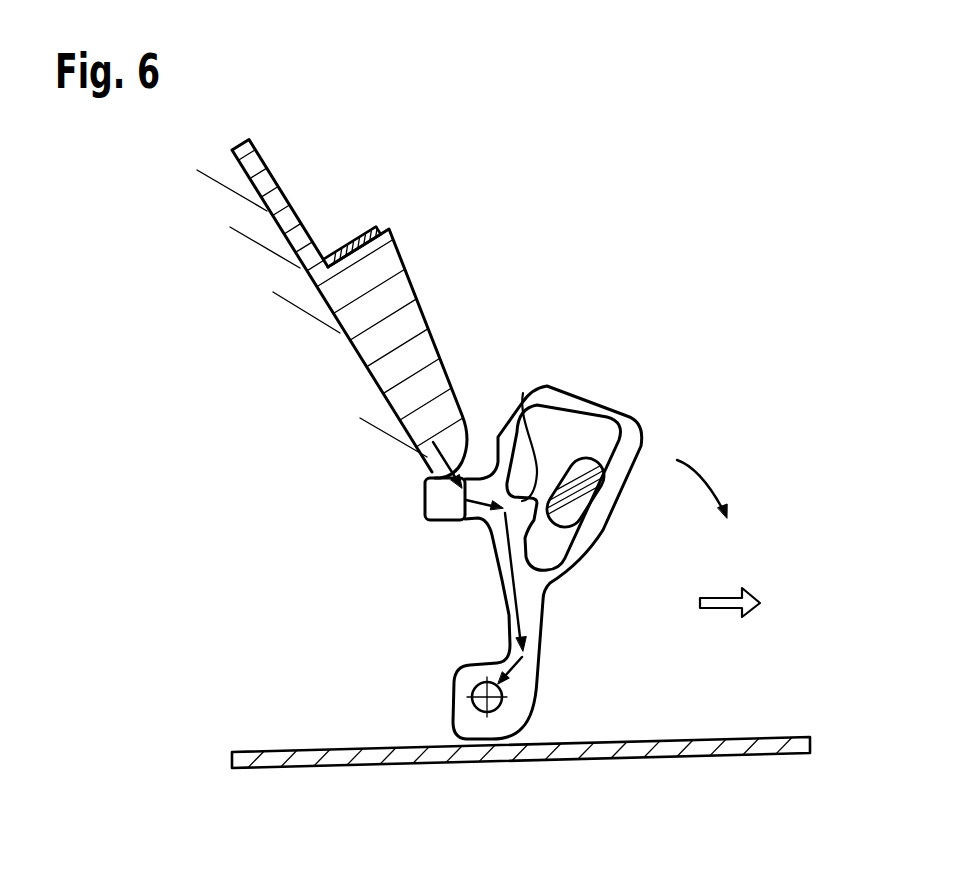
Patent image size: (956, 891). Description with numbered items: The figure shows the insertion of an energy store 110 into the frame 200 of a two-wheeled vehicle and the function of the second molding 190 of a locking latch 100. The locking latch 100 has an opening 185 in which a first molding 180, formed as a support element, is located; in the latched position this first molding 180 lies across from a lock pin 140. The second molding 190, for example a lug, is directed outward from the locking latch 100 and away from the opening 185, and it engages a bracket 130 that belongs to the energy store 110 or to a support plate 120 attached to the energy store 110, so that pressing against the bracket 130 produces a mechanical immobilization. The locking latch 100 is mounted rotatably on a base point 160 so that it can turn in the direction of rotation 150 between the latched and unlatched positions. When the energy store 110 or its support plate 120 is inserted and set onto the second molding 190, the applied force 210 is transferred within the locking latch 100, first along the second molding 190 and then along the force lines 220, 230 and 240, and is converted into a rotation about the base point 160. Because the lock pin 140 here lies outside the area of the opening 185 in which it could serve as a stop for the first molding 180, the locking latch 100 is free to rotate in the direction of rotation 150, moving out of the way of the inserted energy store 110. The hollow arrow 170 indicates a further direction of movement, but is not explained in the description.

The locking latch 100 is at (630, 432).
The energy store 110 is at (318, 333).
The support plate 120 is at (397, 297).
The bracket 130 is at (382, 223).
The lock pin 140 is at (580, 497).
The direction of rotation 150 is at (710, 472).
The base point 160 is at (472, 689).
The displacement direction 170 is at (722, 607).
The first molding 180 is at (523, 393).
The opening 185 is at (577, 433).
The second molding 190 is at (433, 504).
The frame 200 is at (273, 757).
The force 210 is at (425, 471).
The force line 220 is at (465, 518).
The force line 230 is at (502, 565).
The force line 240 is at (518, 667).